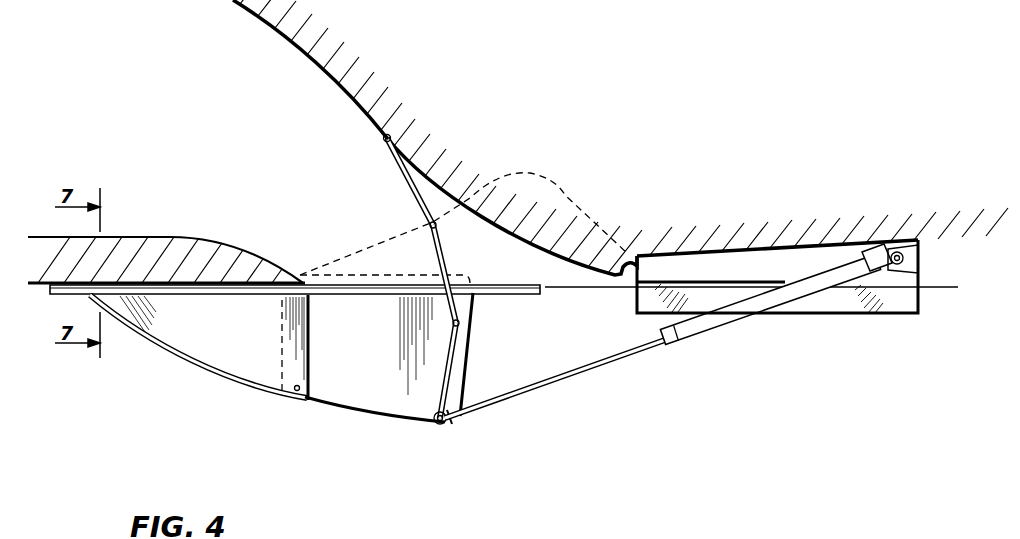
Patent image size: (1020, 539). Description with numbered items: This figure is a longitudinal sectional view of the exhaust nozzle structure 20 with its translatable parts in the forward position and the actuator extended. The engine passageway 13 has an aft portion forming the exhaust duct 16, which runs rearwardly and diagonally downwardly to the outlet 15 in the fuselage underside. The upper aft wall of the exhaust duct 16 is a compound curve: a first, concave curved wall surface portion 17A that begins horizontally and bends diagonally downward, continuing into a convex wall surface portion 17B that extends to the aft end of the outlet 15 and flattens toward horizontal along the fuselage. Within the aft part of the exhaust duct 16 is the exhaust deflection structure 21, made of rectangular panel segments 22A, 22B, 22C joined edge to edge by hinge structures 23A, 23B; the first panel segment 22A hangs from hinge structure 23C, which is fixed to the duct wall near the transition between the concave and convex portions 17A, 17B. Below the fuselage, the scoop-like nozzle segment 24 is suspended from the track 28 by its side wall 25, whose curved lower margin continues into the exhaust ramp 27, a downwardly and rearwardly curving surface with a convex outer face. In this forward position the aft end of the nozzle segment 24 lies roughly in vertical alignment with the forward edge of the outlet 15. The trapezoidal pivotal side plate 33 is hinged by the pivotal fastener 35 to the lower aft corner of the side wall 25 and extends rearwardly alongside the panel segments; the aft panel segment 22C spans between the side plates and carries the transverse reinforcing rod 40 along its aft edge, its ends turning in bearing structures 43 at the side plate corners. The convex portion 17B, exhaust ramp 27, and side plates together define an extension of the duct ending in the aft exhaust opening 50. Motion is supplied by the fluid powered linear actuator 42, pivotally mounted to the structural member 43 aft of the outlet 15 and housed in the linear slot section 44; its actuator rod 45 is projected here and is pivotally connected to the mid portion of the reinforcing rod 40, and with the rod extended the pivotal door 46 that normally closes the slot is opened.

The passageway 13 is at (96, 0).
The outlet 15 is at (583, 285).
The exhaust duct 16 is at (200, 101).
The concave curved wall surface portion 17A is at (250, 14).
The convex wall surface portion 17B is at (547, 262).
The exhaust nozzle structure 20 is at (264, 404).
The exhaust deflection structure 21 is at (423, 249).
The first panel segment 22A is at (393, 168).
The second panel segment 22B is at (442, 258).
The aft panel segment 22C is at (449, 371).
The hinge structure 23A is at (428, 226).
The hinge structure 23B is at (460, 326).
The hinge structure 23C is at (384, 138).
The nozzle segment 24 is at (158, 351).
The left side wall 25 is at (196, 350).
The exhaust ramp 27 is at (236, 378).
The track 28 is at (508, 296).
The pivotal side plate 33 is at (366, 350).
The pivotal fastener 35 is at (302, 388).
The reinforcing rod 40 is at (447, 430).
The linear actuator 42 is at (713, 323).
The structural member 43 is at (927, 275).
The linear slot section 44 is at (740, 253).
The actuator rod 45 is at (508, 397).
The pivotal door 46 is at (803, 310).
The aft exhaust opening 50 is at (372, 428).